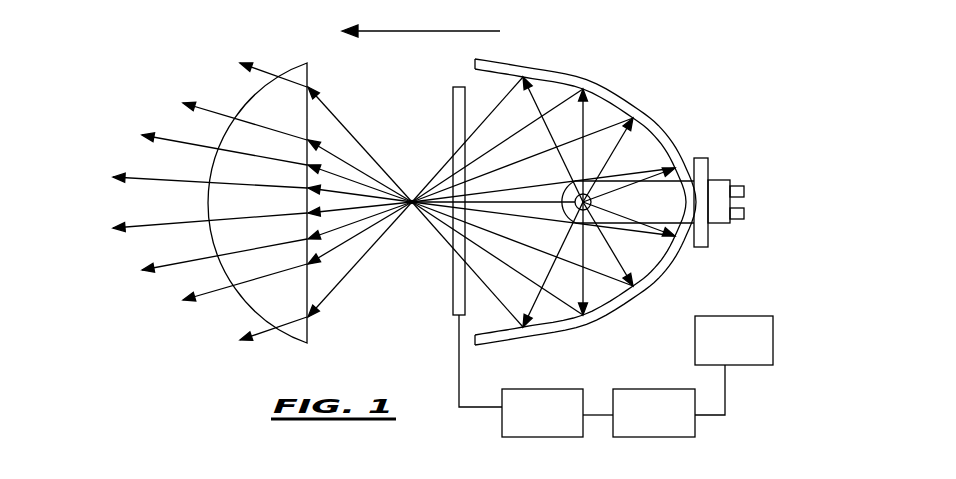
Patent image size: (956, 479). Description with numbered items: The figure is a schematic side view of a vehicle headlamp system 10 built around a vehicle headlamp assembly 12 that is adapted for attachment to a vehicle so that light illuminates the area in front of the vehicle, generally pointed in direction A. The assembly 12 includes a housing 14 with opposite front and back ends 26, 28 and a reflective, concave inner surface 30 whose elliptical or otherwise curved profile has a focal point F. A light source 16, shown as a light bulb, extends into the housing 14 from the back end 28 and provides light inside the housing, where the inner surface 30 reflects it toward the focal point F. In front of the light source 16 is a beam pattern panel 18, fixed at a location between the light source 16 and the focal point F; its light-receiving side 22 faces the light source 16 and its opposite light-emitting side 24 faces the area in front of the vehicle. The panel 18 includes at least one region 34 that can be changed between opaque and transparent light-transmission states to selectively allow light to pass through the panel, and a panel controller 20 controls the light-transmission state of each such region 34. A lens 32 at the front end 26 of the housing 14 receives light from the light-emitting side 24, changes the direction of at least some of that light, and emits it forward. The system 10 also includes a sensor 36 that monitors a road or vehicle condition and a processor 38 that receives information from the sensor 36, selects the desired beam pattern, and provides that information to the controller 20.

The vehicle headlamp system 10 is at (674, 36).
The vehicle headlamp assembly 12 is at (519, 44).
The housing 14 is at (655, 124).
The light source 16 is at (677, 198).
The beam pattern panel 18 is at (453, 295).
The panel controller 20 is at (527, 389).
The light-receiving side 22 is at (469, 98).
The light-emitting side 24 is at (454, 108).
The front end 26 is at (478, 346).
The back end 28 is at (677, 258).
The reflective and concave inner surface 30 is at (609, 107).
The lens 32 is at (305, 70).
The changeable region 34 is at (455, 275).
The sensor 36 is at (775, 330).
The processor 38 is at (632, 389).
The focal point F is at (412, 205).
The direction A is at (421, 20).